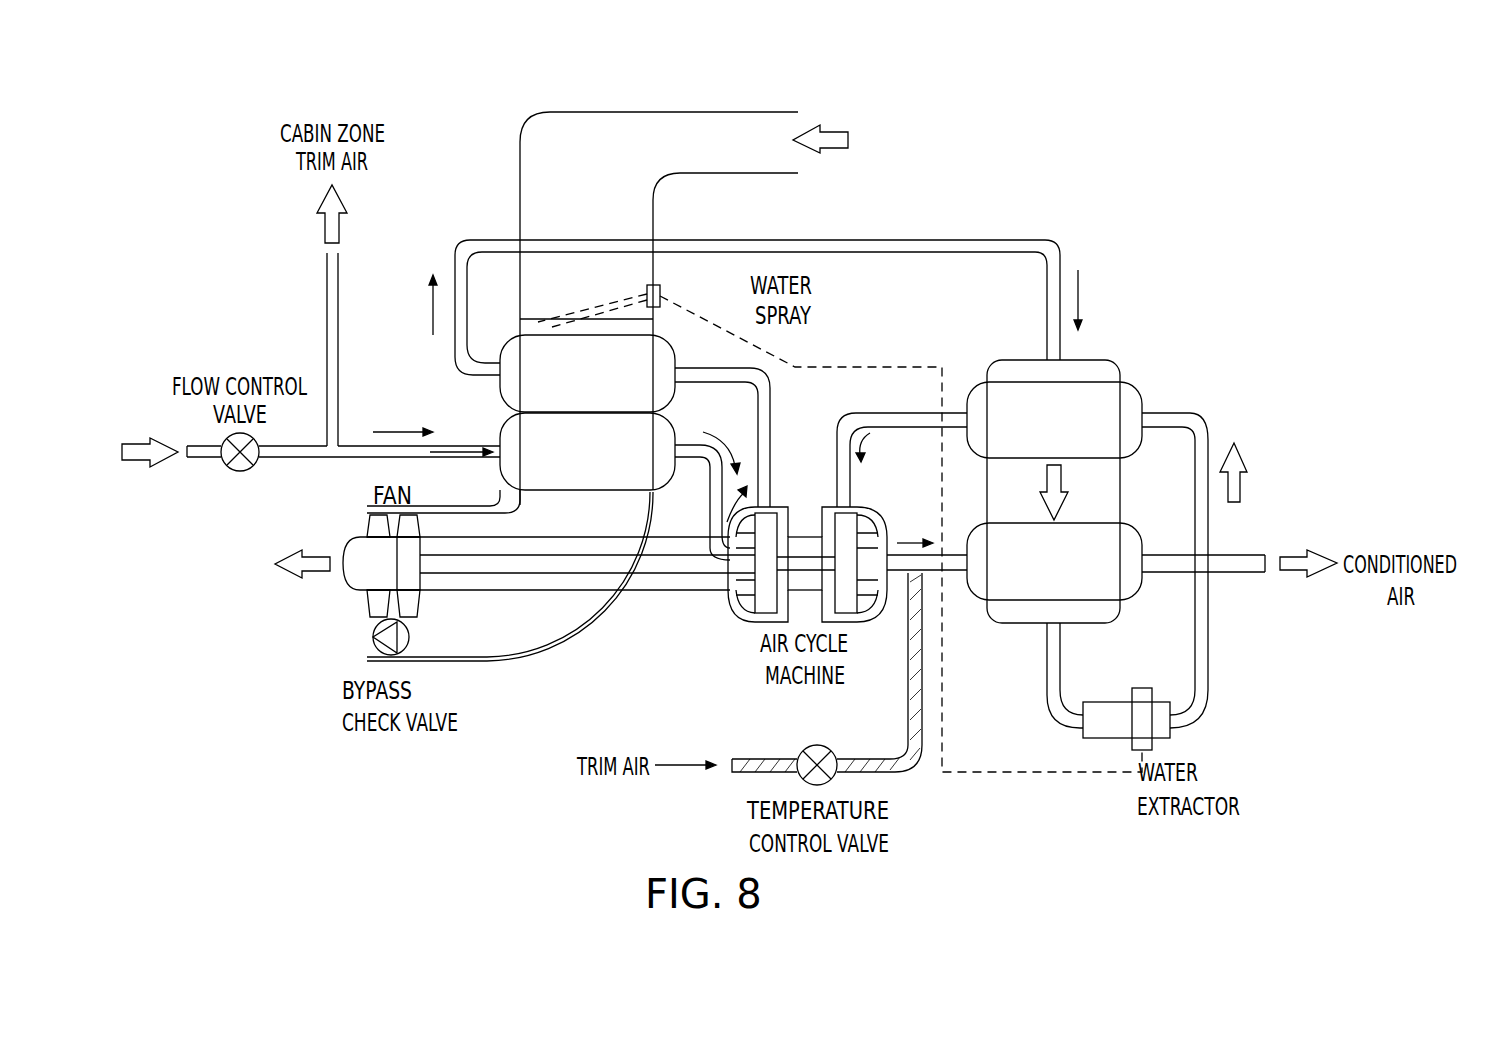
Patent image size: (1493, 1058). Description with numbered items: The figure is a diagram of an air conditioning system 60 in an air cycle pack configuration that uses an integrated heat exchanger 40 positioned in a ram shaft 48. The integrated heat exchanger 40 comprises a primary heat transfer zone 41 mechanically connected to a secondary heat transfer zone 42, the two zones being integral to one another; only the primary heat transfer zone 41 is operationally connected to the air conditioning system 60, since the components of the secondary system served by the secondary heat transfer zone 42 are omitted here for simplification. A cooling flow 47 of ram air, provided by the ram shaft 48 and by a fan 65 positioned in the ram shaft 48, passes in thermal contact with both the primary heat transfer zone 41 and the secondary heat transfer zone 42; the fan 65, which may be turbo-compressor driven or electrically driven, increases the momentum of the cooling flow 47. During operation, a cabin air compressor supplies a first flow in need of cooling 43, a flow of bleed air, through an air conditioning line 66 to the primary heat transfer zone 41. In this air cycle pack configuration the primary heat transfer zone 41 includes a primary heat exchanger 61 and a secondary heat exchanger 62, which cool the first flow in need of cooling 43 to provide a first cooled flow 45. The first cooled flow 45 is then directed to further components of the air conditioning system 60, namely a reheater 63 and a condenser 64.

The air conditioning system 60 is at (213, 136).
The ram shaft 48 is at (637, 112).
The cooling flow 47 is at (840, 126).
The integrated heat exchanger 40 is at (635, 203).
The primary heat transfer zone 41 is at (531, 423).
The secondary heat transfer zone 42 is at (623, 325).
The first cooled flow 45 is at (470, 366).
The first flow in need of cooling 43 is at (136, 445).
The air conditioning line 66 is at (318, 458).
The fan 65 is at (370, 600).
The primary heat exchanger 61 is at (587, 451).
The secondary heat exchanger 62 is at (587, 373).
The reheater 63 is at (1054, 420).
The condenser 64 is at (1054, 561).